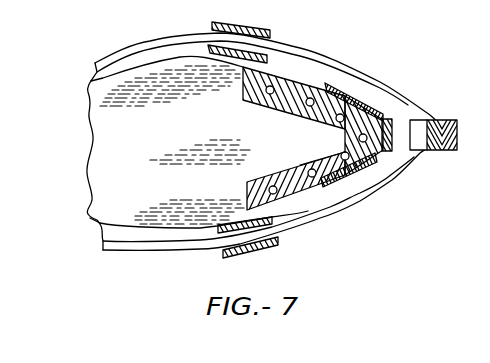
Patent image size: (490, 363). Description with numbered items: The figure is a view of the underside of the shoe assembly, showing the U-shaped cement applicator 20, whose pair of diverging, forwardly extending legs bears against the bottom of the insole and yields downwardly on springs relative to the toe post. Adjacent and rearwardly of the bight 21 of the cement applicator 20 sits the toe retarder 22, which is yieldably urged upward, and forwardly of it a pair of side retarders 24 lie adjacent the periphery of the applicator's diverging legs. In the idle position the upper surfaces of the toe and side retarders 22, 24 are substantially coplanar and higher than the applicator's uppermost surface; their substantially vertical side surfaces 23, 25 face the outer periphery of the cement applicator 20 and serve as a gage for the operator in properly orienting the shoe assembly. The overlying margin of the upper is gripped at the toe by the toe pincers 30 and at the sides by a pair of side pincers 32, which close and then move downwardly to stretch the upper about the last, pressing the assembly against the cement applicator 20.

The cement applicator 20 is at (290, 113).
The bight 21 is at (360, 144).
The toe retarder 22 is at (405, 117).
The side surface 23 is at (368, 119).
The side retarders 24 is at (332, 98).
The side surface 25 is at (318, 158).
The toe pincers 30 is at (440, 151).
The side pincers 32 is at (256, 28).